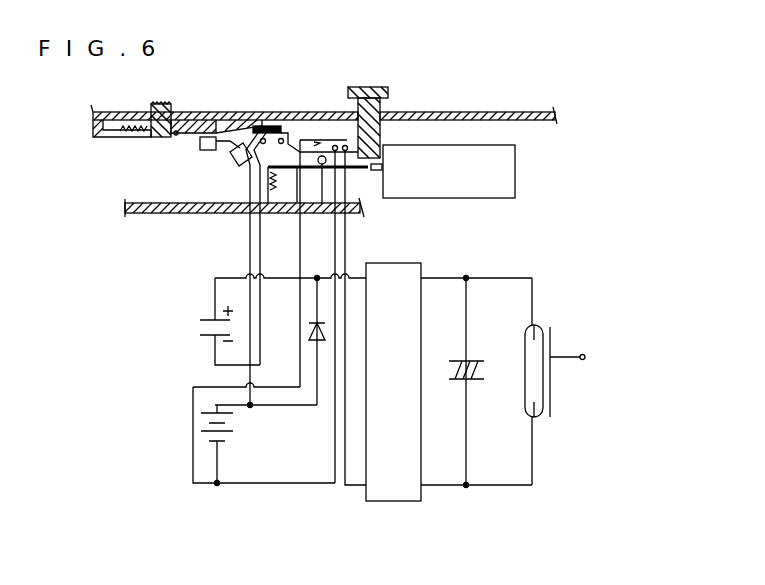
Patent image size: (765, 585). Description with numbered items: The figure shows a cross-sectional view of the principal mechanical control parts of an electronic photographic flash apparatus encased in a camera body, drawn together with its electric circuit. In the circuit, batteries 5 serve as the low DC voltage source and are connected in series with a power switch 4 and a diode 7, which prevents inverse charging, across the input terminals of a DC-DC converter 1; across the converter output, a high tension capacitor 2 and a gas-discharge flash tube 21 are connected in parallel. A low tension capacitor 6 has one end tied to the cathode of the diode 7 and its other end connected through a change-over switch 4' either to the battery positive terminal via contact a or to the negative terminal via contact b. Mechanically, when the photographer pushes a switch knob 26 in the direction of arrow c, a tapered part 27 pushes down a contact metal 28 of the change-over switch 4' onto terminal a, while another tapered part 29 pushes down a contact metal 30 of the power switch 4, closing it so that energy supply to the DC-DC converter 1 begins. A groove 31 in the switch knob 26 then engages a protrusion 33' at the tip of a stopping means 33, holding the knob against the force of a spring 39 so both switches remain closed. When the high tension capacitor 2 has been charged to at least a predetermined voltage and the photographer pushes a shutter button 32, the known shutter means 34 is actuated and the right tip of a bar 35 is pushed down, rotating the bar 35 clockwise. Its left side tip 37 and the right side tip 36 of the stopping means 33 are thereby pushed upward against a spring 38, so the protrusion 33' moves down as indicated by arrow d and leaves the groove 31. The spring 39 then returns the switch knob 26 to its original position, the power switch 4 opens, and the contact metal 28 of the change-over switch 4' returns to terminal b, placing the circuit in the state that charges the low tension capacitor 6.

The DC-DC converter 1 is at (398, 492).
The high tension capacitor 2 is at (455, 368).
The power switch 4 is at (366, 114).
The change-over switch 4' is at (269, 117).
The batteries 5 is at (229, 425).
The low tension capacitor 6 is at (200, 326).
The diode 7 is at (318, 343).
The gas-discharge flash tube 21 is at (538, 335).
The switch knob 26 is at (148, 110).
The tapered part 27 is at (218, 128).
The contact metal 28 is at (230, 163).
The tapered part 29 is at (310, 130).
The contact metal 30 is at (334, 135).
The groove 31 is at (174, 136).
The shutter button 32 is at (370, 90).
The stopping means 33 is at (216, 171).
The protrusion 33' is at (169, 172).
The shutter means 34 is at (516, 170).
The bar 35 is at (363, 173).
The right side tip 36 is at (276, 175).
The left side tip 37 is at (296, 172).
The spring 38 is at (272, 215).
The spring 39 is at (125, 138).